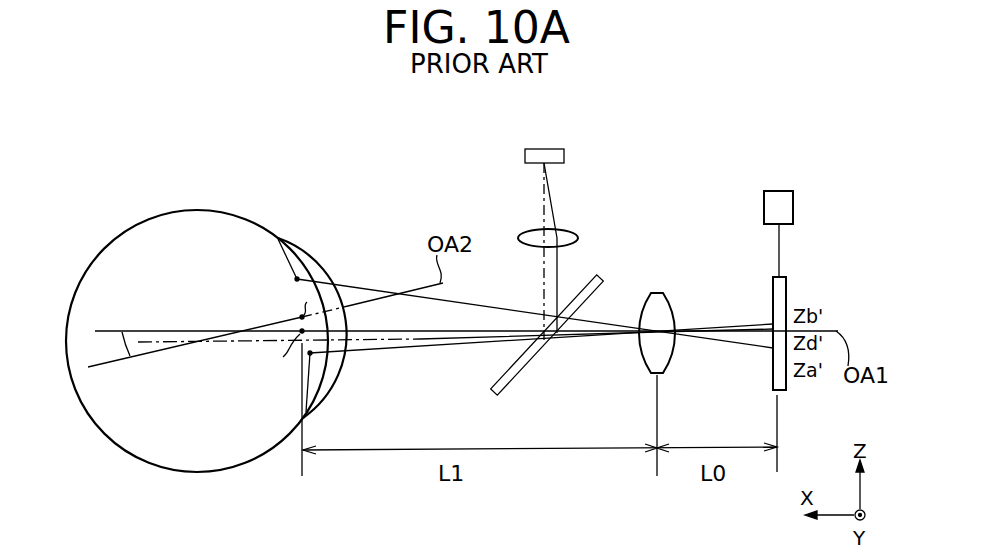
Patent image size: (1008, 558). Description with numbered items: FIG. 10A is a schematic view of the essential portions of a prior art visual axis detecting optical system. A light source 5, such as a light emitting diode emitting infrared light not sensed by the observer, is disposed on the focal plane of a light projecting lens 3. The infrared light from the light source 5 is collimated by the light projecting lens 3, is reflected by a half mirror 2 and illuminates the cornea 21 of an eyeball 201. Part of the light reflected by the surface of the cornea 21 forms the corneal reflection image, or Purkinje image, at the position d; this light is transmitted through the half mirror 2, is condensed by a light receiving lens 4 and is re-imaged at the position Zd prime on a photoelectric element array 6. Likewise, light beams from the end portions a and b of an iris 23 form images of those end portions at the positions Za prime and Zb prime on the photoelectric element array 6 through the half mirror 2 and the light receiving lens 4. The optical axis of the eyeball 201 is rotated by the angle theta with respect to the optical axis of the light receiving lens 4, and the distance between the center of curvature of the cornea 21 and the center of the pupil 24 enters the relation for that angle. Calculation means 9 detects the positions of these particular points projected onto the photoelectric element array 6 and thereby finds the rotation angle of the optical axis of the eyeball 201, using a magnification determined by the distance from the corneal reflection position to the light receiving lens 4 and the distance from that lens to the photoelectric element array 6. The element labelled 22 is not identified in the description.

The eyeball 201 is at (175, 196).
The eyeball 22 is at (239, 210).
The cornea 21 is at (321, 262).
The iris 23 is at (283, 263).
The pupil 24 is at (303, 281).
The half mirror 2 is at (493, 398).
The light projecting lens 3 is at (578, 238).
The light receiving lens 4 is at (661, 293).
The light source 5 is at (564, 156).
The photoelectric element array 6 is at (786, 278).
The calculation means 9 is at (793, 208).